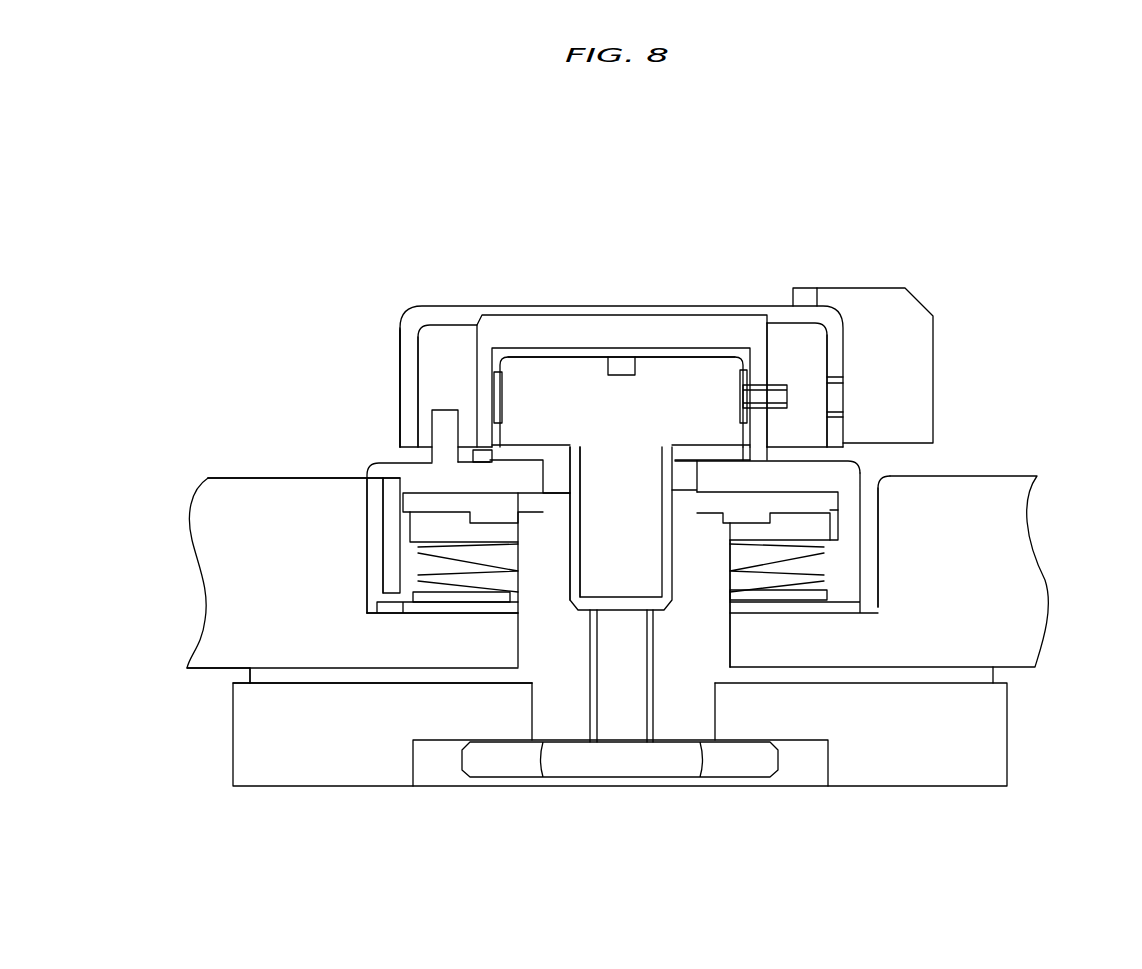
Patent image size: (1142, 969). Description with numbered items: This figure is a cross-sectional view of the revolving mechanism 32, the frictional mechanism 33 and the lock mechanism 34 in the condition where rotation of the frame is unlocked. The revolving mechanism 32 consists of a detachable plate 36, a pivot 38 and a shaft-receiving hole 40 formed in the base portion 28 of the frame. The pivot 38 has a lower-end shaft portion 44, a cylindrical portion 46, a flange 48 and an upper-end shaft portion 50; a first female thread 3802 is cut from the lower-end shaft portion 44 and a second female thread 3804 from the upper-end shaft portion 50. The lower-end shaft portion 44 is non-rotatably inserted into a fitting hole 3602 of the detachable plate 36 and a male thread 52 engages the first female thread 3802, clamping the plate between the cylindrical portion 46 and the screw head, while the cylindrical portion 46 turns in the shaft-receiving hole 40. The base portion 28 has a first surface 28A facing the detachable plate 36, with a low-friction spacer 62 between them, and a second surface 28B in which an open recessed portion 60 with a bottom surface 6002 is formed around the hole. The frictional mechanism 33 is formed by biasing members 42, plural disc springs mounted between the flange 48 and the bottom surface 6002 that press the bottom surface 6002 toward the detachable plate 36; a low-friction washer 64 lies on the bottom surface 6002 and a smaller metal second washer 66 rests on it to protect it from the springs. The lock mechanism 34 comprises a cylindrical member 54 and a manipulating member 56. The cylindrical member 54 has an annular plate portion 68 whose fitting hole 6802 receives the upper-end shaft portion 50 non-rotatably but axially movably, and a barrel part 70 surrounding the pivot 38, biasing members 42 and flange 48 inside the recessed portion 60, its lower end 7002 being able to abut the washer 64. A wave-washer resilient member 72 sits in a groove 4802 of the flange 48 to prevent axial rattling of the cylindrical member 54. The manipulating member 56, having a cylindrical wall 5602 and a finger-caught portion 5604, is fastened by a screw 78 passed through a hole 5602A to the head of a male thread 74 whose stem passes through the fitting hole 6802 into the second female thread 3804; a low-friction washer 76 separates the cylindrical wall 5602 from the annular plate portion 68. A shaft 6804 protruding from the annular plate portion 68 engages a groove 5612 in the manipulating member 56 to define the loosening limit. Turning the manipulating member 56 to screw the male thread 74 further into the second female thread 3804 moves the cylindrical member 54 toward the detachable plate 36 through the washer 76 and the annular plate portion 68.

The lock mechanism 34 is at (333, 258).
The annular plate portion 68 is at (850, 425).
The groove 5612 is at (420, 362).
The cylindrical wall 5602 is at (400, 372).
The shaft 6804 is at (432, 427).
The manipulating member for locking 56 is at (825, 283).
The finger-caught portion 5604 is at (920, 340).
The hole 5602A is at (847, 397).
The screw 78 is at (770, 380).
The washer 76 is at (735, 448).
The male thread 74 is at (518, 508).
The fitting hole 6802 is at (580, 574).
The second female thread 3804 is at (563, 567).
The upper-end shaft portion 50 is at (697, 490).
The recessed groove 4802 is at (395, 502).
The resilient member 72 is at (488, 505).
The cylindrical member 54 is at (872, 464).
The barrel part 70 is at (862, 548).
The flange 48 is at (823, 520).
The biasing members 42 is at (823, 582).
The lower end 7002 is at (845, 588).
The pivot 38 is at (707, 637).
The cylindrical portion 46 is at (730, 623).
The second washer 66 is at (813, 607).
The washer 64 is at (857, 608).
The first female thread 3802 is at (596, 698).
The male thread 52 is at (643, 692).
The revolving mechanism 32 is at (687, 808).
The lower-end shaft portion 44 is at (700, 712).
The detachable plate 36 is at (990, 750).
The fitting hole 3602 is at (532, 708).
The shaft-receiving hole 40 is at (532, 694).
The base portion 28 is at (208, 588).
The second surface 28B is at (240, 478).
The recessed portion 60 is at (370, 571).
The frictional mechanism 33 is at (898, 585).
The bottom surface 6002 is at (368, 613).
The spacer 62 is at (248, 676).
The first surface 28A is at (320, 672).